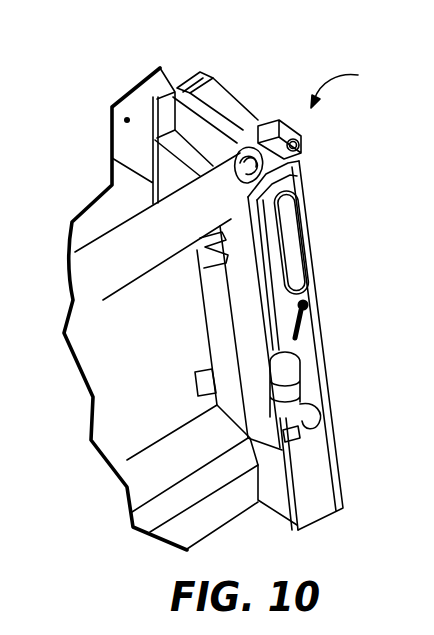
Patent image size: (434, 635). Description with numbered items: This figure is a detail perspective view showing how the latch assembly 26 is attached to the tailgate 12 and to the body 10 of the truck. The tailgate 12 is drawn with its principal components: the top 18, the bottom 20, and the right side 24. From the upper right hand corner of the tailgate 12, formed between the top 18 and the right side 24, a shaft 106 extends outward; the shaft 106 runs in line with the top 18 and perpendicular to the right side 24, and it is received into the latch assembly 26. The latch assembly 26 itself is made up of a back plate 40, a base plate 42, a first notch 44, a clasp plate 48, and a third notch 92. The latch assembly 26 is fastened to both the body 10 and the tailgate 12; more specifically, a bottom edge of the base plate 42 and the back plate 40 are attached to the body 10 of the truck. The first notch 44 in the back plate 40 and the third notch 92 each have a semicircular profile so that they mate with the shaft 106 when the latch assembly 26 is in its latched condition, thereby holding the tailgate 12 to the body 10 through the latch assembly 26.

The body 10 is at (320, 378).
The tailgate 12 is at (151, 374).
The top 18 is at (118, 245).
The bottom 20 is at (172, 512).
The right side 24 is at (258, 307).
The latch assembly 26 is at (348, 87).
The back plate 40 is at (185, 110).
The base plate 42 is at (197, 73).
The first notch 44 is at (238, 157).
The clasp plate 48 is at (268, 155).
The third notch 92 is at (290, 177).
The shaft 106 is at (240, 163).